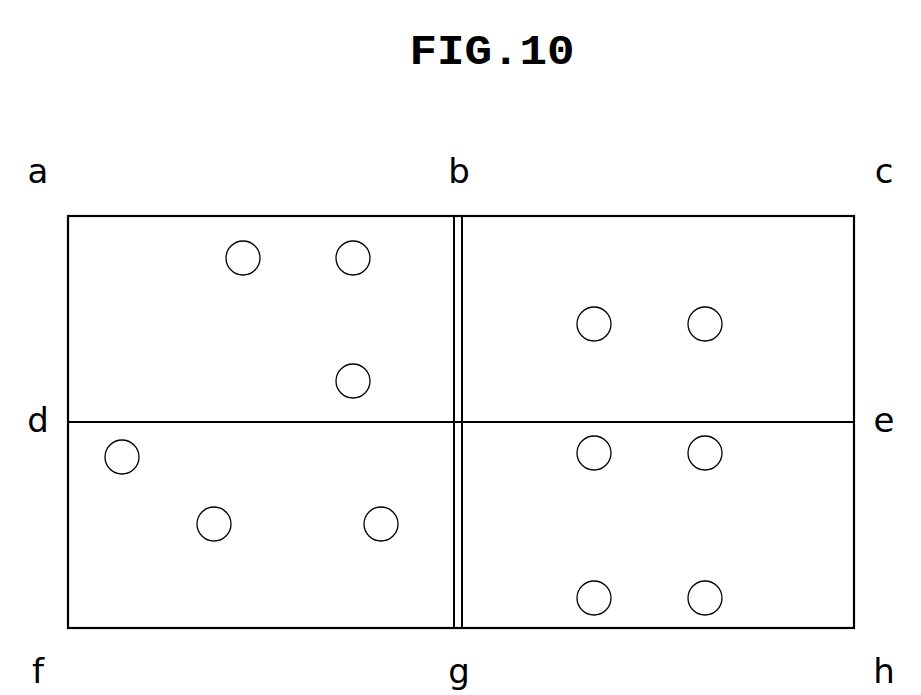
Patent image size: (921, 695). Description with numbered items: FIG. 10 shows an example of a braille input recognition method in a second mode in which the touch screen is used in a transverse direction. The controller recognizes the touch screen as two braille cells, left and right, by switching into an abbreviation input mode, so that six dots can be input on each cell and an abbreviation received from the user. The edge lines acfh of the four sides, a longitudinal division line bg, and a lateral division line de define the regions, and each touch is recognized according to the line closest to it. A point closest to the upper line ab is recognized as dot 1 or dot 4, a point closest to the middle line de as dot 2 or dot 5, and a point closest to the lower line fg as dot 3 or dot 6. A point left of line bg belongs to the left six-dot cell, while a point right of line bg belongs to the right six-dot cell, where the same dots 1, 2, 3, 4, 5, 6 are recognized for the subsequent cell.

The dot 1 is at (418, 291).
The dot 2 is at (358, 455).
The dot 3 is at (404, 561).
The dot 4 is at (529, 291).
The dot 5 is at (529, 417).
The dot 6 is at (543, 561).